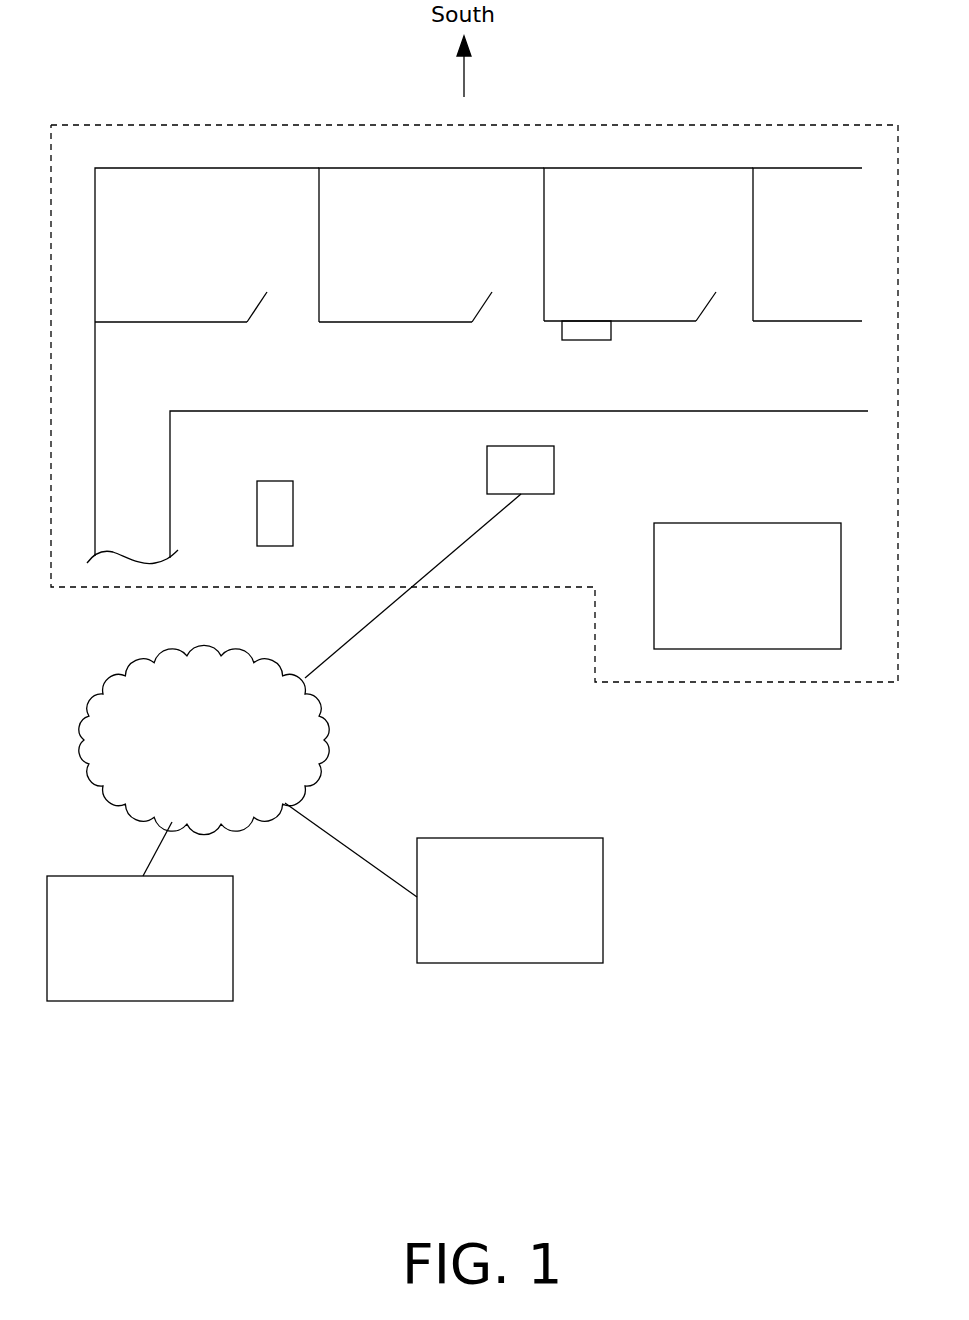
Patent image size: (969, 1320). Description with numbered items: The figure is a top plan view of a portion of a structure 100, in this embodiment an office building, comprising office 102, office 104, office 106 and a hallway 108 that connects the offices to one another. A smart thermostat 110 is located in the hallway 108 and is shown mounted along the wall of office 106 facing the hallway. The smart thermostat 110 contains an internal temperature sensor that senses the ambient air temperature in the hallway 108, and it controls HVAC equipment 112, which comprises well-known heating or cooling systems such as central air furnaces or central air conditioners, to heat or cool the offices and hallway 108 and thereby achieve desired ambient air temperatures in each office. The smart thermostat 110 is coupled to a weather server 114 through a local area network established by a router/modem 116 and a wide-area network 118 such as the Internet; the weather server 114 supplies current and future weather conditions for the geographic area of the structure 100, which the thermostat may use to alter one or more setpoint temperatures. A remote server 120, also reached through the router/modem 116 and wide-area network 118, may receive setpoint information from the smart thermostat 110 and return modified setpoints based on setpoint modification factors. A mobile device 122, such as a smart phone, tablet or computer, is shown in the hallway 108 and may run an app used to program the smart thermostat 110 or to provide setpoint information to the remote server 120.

The structure 100 is at (823, 125).
The office 102 is at (207, 245).
The office 104 is at (431, 245).
The office 106 is at (648, 244).
The hallway 108 is at (244, 384).
The smart thermostat 110 is at (600, 340).
The HVAC equipment 112 is at (728, 598).
The weather server 114 is at (491, 912).
The router/modem 116 is at (501, 482).
The wide-area network 118 is at (186, 752).
The remote server 120 is at (121, 951).
The mobile device 122 is at (293, 512).